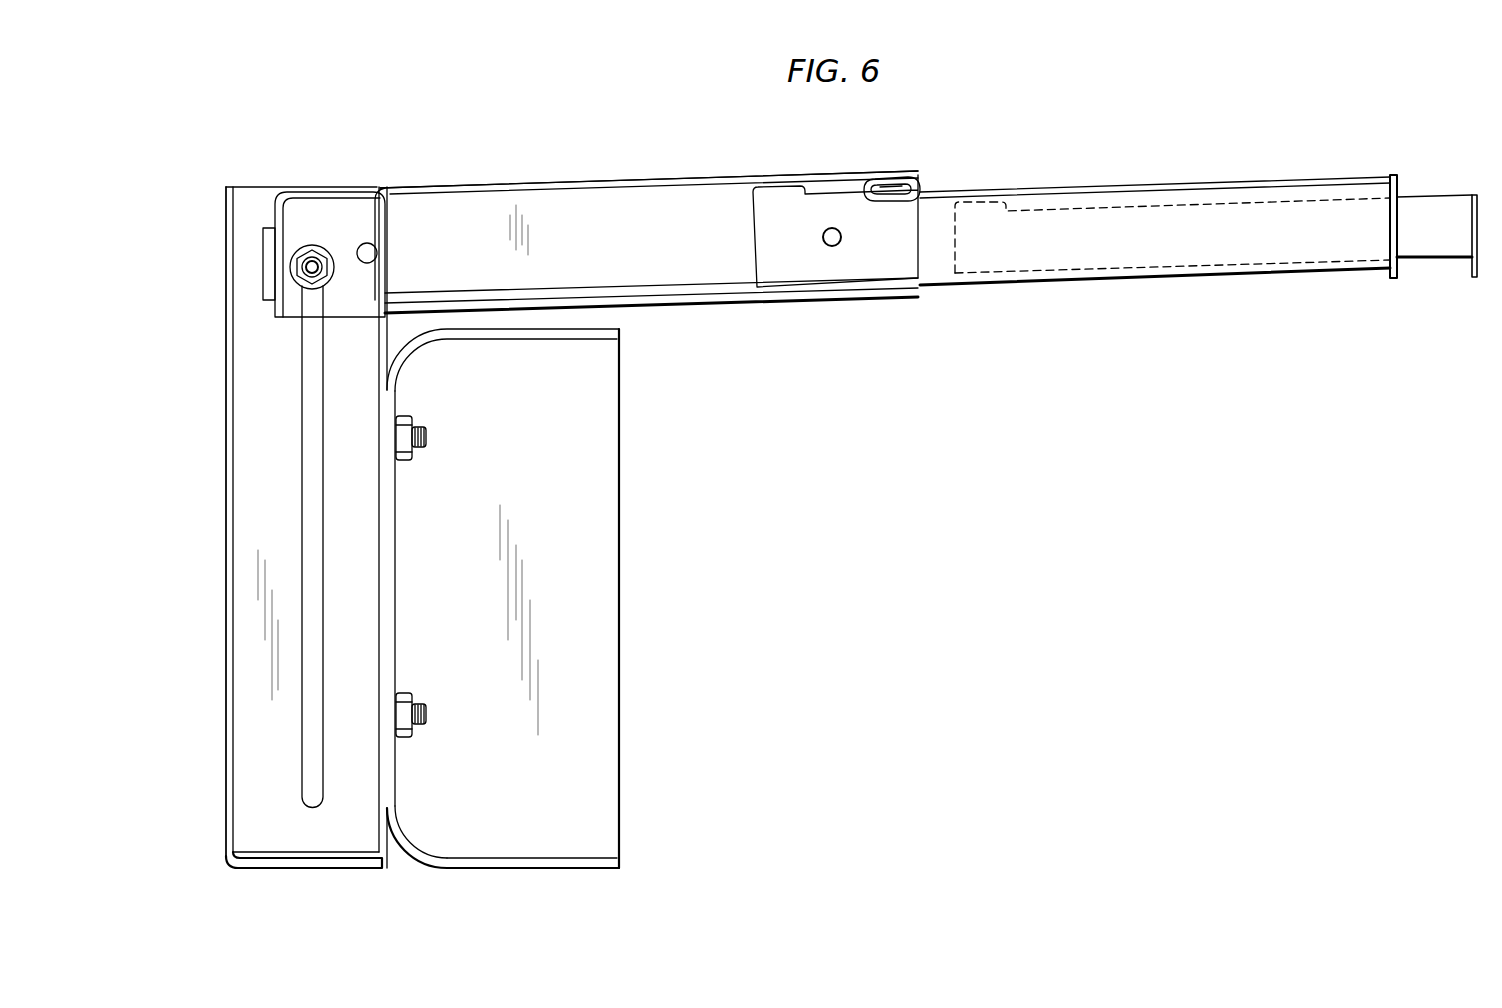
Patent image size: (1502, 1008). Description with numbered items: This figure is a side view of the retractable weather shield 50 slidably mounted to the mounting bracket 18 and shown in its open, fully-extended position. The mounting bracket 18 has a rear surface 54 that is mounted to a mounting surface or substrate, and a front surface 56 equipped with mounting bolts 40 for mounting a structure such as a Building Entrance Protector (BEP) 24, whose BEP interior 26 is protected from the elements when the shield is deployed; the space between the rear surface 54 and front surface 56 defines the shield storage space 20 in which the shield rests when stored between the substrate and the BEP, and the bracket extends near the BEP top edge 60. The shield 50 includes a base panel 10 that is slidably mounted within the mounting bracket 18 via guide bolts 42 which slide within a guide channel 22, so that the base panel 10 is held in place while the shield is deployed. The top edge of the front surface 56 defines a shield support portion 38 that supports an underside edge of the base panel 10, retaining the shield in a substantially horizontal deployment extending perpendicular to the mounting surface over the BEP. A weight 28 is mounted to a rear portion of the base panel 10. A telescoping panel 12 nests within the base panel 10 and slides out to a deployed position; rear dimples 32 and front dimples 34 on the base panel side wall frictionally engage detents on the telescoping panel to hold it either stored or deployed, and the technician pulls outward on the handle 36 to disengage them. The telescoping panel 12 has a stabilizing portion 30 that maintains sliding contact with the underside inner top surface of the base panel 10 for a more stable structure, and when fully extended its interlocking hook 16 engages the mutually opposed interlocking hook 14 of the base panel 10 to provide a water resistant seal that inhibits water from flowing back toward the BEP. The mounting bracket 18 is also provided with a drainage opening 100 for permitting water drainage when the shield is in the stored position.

The base panel 10 is at (555, 178).
The telescoping panel 12 is at (1125, 182).
The interlocking hook 14 is at (887, 181).
The interlocking hook 16 is at (915, 183).
The mounting bracket 18 is at (243, 166).
The shield storage space 20 is at (240, 785).
The guide channel 22 is at (305, 497).
The Building Entrance Protector (BEP) 24 is at (548, 865).
The BEP interior 26 is at (598, 488).
The weight 28 is at (265, 262).
The stabilizing portion 30 is at (778, 190).
The rear dimple 32 is at (372, 250).
The front dimple 34 is at (845, 237).
The handle 36 is at (1397, 238).
The shield support portion 38 is at (388, 305).
The mounting bolts 40 is at (427, 437).
The guide bolts 42 is at (310, 272).
The weather shield 50 is at (690, 132).
The rear surface 54 is at (228, 690).
The front surface 56 is at (385, 840).
The BEP top edge 60 is at (600, 331).
The drainage opening 100 is at (312, 857).